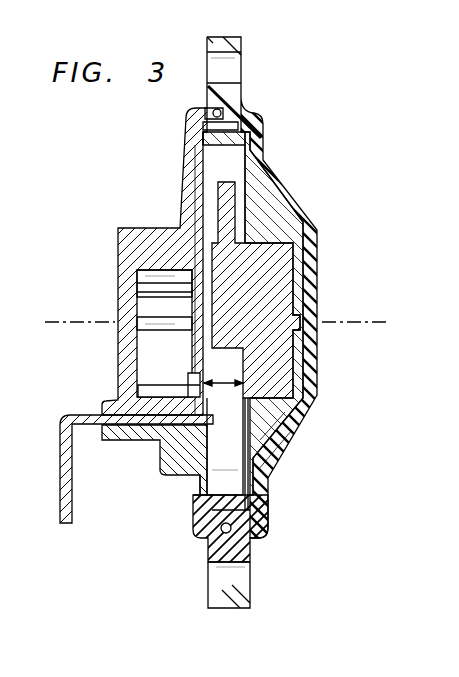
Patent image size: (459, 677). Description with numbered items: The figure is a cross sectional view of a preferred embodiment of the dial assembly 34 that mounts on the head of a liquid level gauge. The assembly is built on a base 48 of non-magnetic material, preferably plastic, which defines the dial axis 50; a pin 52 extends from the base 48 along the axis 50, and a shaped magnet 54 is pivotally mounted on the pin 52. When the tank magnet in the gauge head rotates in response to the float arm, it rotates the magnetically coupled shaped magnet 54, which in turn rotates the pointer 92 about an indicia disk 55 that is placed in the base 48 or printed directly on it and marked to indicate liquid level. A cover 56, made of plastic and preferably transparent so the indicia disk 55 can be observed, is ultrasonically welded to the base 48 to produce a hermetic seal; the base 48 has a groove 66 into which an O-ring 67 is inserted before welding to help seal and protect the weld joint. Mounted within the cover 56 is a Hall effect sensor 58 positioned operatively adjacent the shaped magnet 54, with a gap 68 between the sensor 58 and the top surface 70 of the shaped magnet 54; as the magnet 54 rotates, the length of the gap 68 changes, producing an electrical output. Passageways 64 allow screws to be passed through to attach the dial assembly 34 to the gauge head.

The tensioner assembly 34 is at (303, 138).
The base 48 is at (318, 432).
The dial axis 50 is at (376, 322).
The pin 52 is at (263, 318).
The shaped magnet 54 is at (270, 228).
The indicia disk 55 is at (276, 462).
The cover 56 is at (118, 262).
The Hall effect sensor 58 is at (174, 380).
The passageways 64 is at (229, 82).
The groove 66 is at (262, 516).
The O-ring 67 is at (221, 532).
The gap 68 is at (243, 384).
The top surface 70 is at (238, 404).
The pointer 92 is at (205, 205).